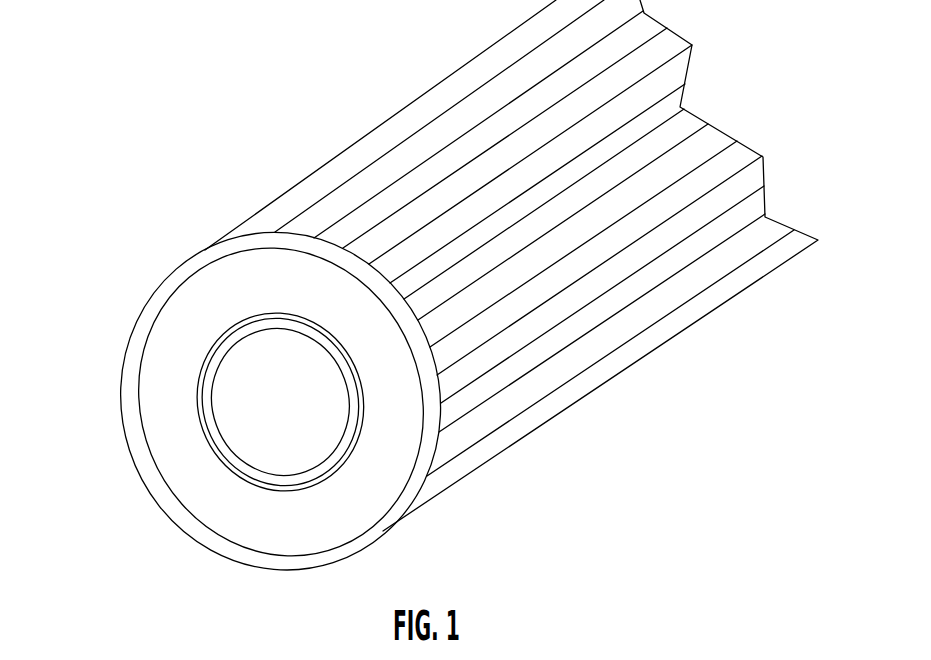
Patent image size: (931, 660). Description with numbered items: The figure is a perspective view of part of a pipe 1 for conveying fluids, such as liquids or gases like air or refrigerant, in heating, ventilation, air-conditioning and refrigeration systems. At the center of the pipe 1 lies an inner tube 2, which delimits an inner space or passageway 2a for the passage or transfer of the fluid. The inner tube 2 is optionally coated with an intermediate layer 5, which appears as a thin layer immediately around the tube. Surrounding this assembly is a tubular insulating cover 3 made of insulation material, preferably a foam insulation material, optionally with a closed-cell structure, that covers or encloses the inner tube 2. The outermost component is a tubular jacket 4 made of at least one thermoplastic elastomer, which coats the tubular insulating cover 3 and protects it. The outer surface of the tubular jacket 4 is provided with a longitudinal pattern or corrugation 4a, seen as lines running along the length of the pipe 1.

The pipe 1 is at (612, 455).
The inner tube 2 is at (213, 428).
The inner space or passageway 2a is at (260, 378).
The tubular insulating cover 3 is at (367, 492).
The tubular jacket 4 is at (417, 477).
The longitudinal pattern or corrugation 4a is at (563, 98).
The intermediate layer 5 is at (273, 488).